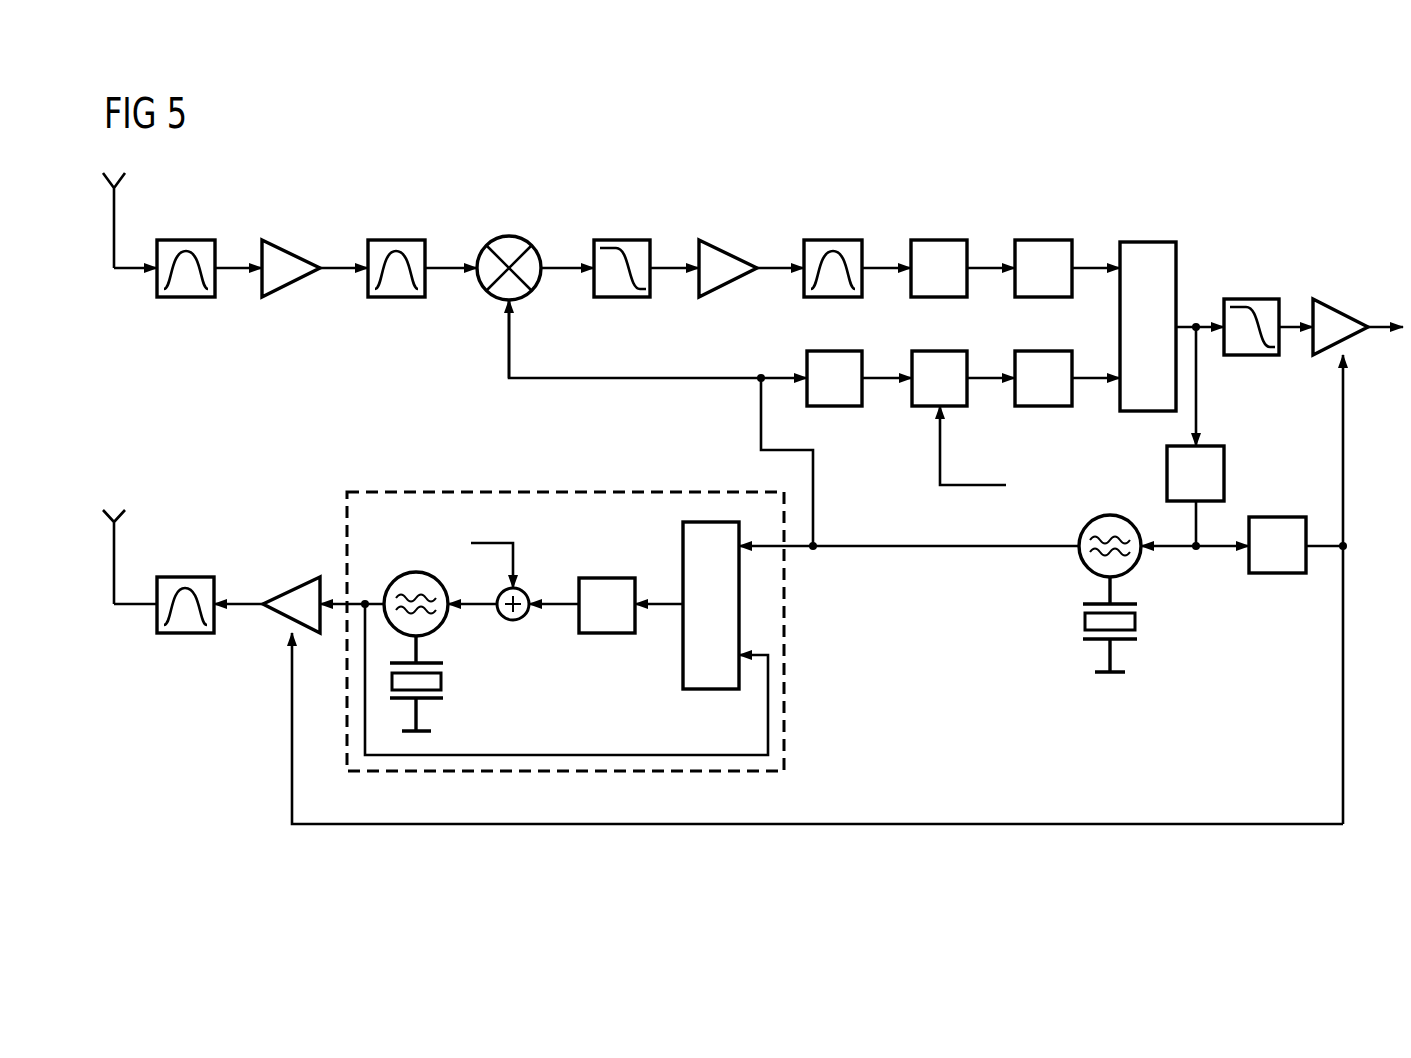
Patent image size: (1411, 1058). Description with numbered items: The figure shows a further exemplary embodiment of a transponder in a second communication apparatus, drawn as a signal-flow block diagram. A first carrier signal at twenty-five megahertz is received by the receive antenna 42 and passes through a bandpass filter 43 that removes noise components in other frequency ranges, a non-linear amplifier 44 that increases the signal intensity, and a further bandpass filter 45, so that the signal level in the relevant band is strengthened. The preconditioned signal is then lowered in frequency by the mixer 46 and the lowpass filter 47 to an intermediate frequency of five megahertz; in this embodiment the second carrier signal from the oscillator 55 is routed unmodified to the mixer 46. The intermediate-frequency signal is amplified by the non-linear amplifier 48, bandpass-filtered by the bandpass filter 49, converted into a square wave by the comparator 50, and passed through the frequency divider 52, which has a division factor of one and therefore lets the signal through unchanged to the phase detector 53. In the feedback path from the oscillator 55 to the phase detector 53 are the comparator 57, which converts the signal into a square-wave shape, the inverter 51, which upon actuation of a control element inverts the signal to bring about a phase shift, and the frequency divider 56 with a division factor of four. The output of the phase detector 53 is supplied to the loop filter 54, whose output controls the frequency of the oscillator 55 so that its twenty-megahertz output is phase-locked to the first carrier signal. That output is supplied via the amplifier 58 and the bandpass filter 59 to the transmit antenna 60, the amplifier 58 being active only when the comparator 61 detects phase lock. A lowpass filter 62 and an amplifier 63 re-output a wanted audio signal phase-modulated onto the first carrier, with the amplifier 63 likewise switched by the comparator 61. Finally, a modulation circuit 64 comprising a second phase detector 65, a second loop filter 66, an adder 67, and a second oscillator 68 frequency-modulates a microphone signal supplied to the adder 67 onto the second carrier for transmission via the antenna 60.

The receive antenna 42 is at (121, 180).
The bandpass filter 43 is at (189, 297).
The non-linear amplifier 44 is at (291, 255).
The further bandpass filter 45 is at (398, 240).
The mixer 46 is at (509, 236).
The lowpass filter 47 is at (620, 240).
The non-linear amplifier 48 is at (727, 255).
The bandpass filter 49 is at (835, 240).
The comparator 50 is at (939, 240).
The inverter 51 is at (953, 406).
The frequency divider 52 is at (1044, 240).
The phase detector 53 is at (1148, 242).
The loop filter 54 is at (1224, 475).
The oscillator 55 is at (1108, 515).
The frequency divider 56 is at (1044, 406).
The comparator 57 is at (833, 406).
The amplifier 58 is at (292, 590).
The bandpass filter 59 is at (188, 633).
The transmit antenna 60 is at (121, 517).
The comparator 61 is at (1275, 573).
The lowpass filter 62 is at (1250, 299).
The amplifier 63 is at (1340, 313).
The modulation circuit 64 is at (784, 718).
The second phase detector 65 is at (683, 660).
The second loop filter 66 is at (607, 578).
The adder 67 is at (517, 620).
The second oscillator 68 is at (414, 572).